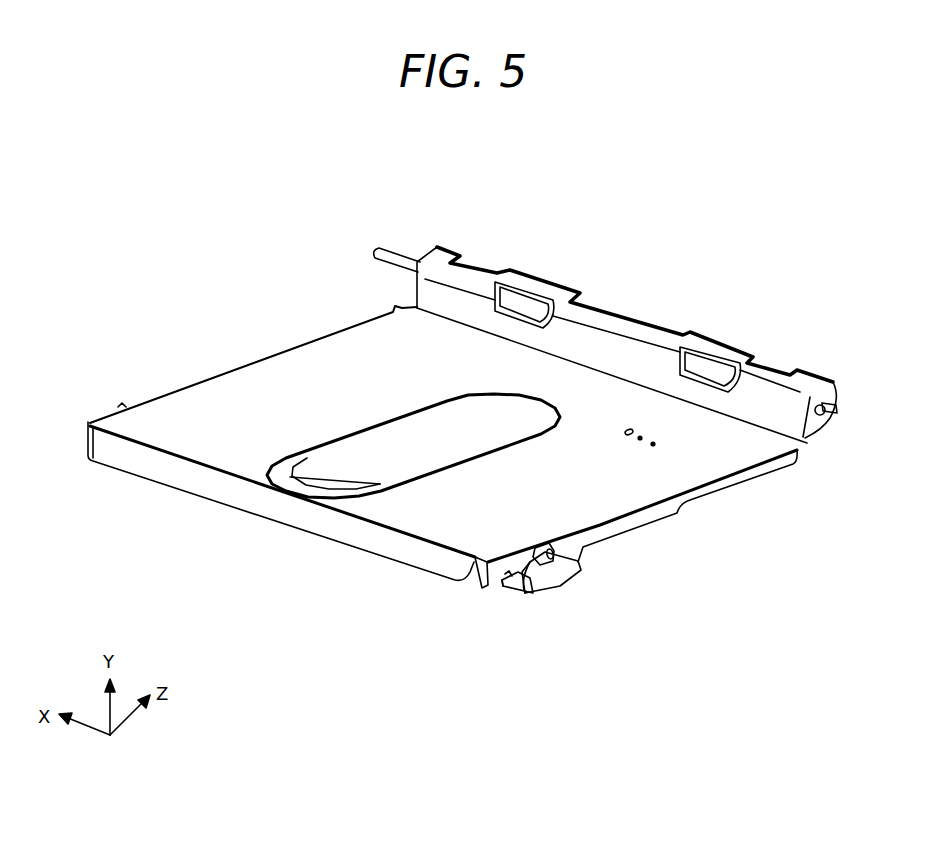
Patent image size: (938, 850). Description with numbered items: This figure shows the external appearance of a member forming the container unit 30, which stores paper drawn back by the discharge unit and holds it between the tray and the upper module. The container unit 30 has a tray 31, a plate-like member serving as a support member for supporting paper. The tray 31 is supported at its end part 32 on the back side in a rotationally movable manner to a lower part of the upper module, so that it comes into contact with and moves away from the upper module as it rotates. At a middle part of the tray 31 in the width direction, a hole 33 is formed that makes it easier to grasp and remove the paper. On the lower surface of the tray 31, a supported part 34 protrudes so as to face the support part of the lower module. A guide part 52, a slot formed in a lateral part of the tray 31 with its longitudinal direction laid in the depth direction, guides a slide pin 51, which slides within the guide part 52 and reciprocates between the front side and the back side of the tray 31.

The container unit 30 is at (199, 284).
The tray 31 is at (197, 440).
The end part 32 is at (815, 430).
The hole 33 is at (357, 440).
The supported part 34 is at (553, 593).
The slide pin 51 is at (527, 596).
The guide part 52 is at (560, 550).